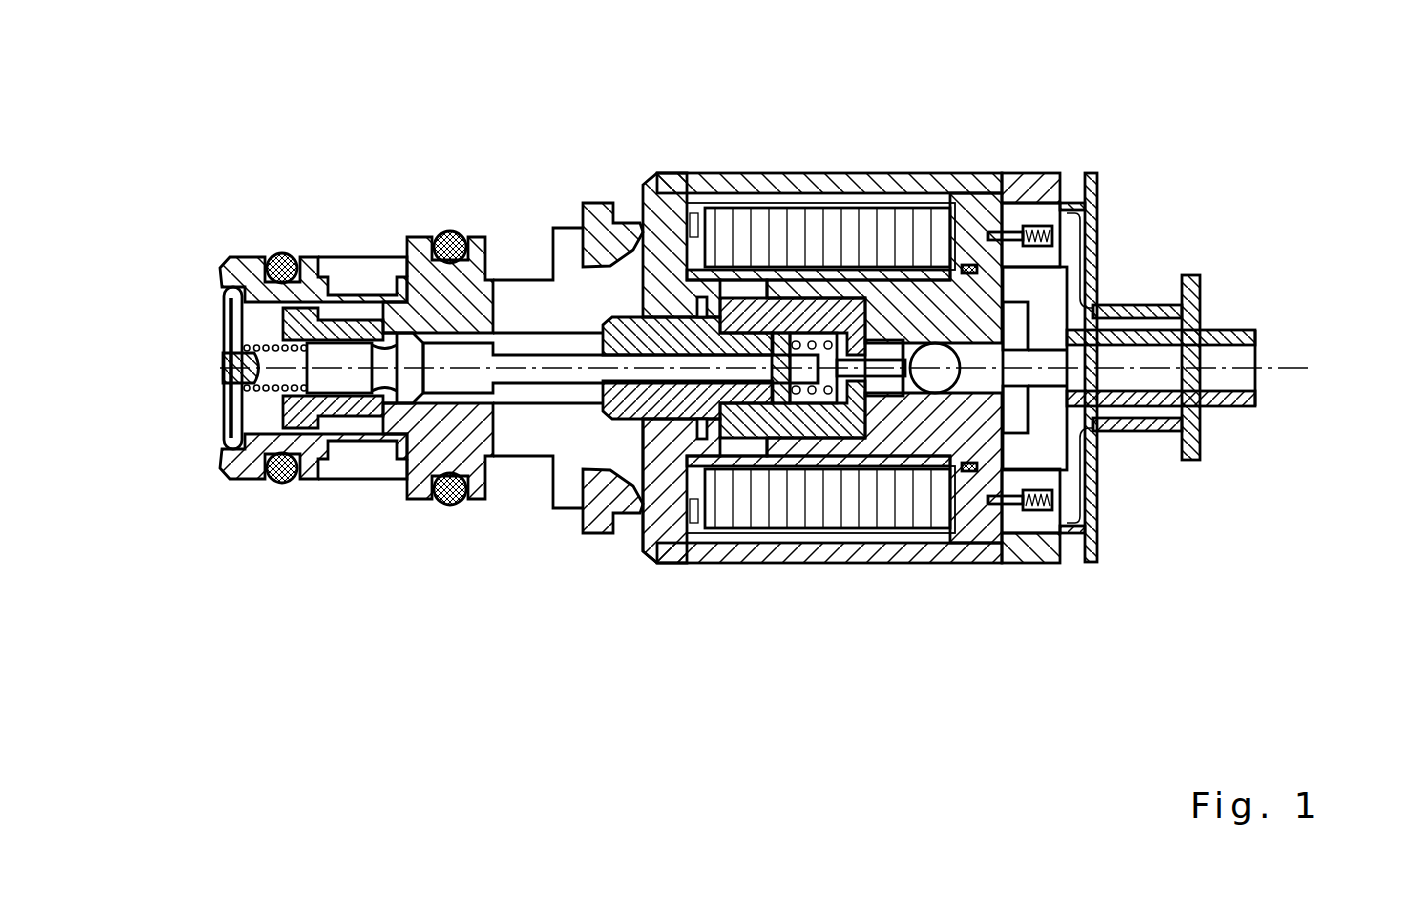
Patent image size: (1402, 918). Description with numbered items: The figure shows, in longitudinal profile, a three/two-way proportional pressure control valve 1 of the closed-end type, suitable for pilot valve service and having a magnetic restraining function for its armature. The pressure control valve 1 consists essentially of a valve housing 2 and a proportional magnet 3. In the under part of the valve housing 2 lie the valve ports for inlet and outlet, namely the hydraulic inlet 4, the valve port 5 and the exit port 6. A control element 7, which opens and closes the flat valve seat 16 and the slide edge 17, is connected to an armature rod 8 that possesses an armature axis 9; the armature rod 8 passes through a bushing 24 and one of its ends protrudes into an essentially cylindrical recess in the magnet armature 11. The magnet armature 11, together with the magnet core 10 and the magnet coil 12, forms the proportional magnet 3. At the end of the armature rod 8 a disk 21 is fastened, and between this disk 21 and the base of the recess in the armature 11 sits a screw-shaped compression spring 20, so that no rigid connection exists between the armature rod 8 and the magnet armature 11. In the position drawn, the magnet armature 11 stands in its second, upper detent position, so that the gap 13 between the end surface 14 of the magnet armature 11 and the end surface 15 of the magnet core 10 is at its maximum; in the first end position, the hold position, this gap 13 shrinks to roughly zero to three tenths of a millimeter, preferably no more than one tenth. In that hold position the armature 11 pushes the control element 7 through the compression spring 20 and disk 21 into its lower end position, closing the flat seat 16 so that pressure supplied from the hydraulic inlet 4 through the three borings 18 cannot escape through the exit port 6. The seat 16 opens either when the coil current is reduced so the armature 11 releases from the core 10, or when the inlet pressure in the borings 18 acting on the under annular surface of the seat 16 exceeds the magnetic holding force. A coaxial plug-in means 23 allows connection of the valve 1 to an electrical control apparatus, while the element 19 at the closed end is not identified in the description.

The pressure control valve 1 is at (737, 148).
The valve housing 2 is at (523, 480).
The proportional magnet 3 is at (773, 575).
The hydraulic inlet 4 is at (363, 212).
The valve port 5 is at (245, 368).
The exit port 6 is at (523, 220).
The control element 7 is at (382, 360).
The armature rod 8 is at (590, 372).
The armature axis 9 is at (1268, 375).
The magnet core 10 is at (668, 210).
The magnet armature 11 is at (980, 533).
The coil 12 is at (855, 238).
The gap 13 is at (698, 443).
The end surface of the magnet armature 14 is at (655, 500).
The end surface of the magnet core 15 is at (747, 303).
The valve seat 16 is at (408, 430).
The slide edge 17 is at (360, 407).
The borings 18 is at (383, 400).
The pressure pin 19 is at (257, 393).
The compression spring 20 is at (803, 392).
The disk 21 is at (782, 403).
The coaxial plug-in means 23 is at (1215, 308).
The bushing 24 is at (627, 345).